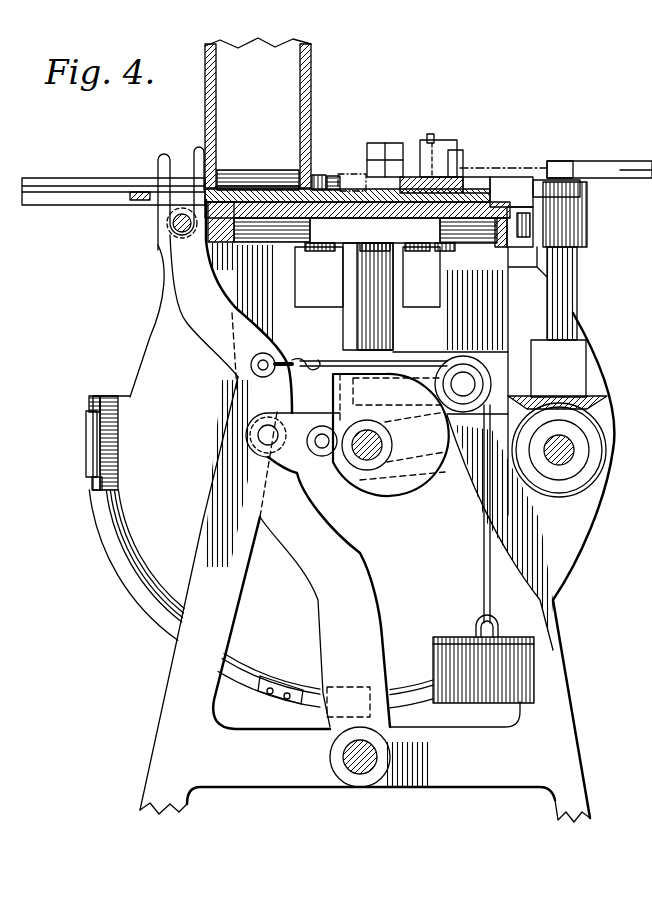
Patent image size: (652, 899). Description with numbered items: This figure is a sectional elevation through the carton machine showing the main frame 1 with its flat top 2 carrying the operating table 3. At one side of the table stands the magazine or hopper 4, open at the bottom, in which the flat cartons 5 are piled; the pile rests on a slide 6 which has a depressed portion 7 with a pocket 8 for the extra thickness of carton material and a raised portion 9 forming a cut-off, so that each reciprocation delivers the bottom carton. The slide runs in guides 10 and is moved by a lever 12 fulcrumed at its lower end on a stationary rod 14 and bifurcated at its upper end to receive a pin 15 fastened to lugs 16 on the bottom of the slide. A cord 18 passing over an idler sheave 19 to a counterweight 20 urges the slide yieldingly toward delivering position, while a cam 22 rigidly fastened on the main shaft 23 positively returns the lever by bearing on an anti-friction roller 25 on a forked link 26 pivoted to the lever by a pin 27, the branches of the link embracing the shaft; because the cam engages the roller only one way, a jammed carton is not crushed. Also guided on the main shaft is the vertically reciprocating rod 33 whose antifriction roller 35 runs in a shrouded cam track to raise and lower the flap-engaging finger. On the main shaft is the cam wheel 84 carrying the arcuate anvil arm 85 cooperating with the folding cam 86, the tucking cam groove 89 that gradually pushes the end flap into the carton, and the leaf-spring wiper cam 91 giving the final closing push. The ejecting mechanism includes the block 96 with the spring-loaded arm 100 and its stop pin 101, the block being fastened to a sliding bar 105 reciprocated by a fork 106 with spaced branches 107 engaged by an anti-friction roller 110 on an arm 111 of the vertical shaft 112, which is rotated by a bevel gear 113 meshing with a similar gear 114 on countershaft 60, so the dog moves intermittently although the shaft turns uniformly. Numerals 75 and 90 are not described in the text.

The main frame 1 is at (175, 695).
The flat top 2 is at (287, 212).
The operating table 3 is at (220, 214).
The magazine or hopper 4 is at (312, 91).
The flat cartons 5 is at (253, 172).
The slide 6 is at (137, 197).
The depressed portion 7 is at (390, 197).
The pocket 8 is at (319, 277).
The raised portion 9 is at (287, 188).
The guides 10 is at (72, 185).
The lever 12 is at (202, 322).
The stationary rod 14 is at (330, 757).
The pin 15 is at (178, 236).
The lugs 16 is at (167, 228).
The cord 18 is at (317, 353).
The idler sheave 19 is at (483, 371).
The counterweight 20 is at (523, 670).
The cam 22 is at (390, 497).
The main shaft 23 is at (373, 447).
The anti-friction roller 25 is at (323, 457).
The forked link 26 is at (308, 468).
The pin 27 is at (258, 435).
The vertically reciprocating rod 33 is at (353, 173).
The antifriction roller 35 is at (385, 143).
The countershaft 60 is at (557, 462).
The ring 75 is at (323, 180).
The cam wheel 84 is at (137, 367).
The arm 85 is at (88, 443).
The cam 86 is at (92, 417).
The cam groove 89 is at (148, 582).
The stop 90 is at (428, 140).
The wiper cam 91 is at (307, 698).
The block 96 is at (456, 150).
The arm 100 is at (447, 136).
The stop pin 101 is at (447, 146).
The sliding bar 105 is at (472, 188).
The fork 106 is at (440, 185).
The branches 107 is at (630, 170).
The anti-friction roller 110 is at (577, 163).
The arm 111 is at (562, 185).
The vertical shaft 112 is at (560, 270).
The bevel gear 113 is at (607, 401).
The bevel gear 114 is at (600, 453).